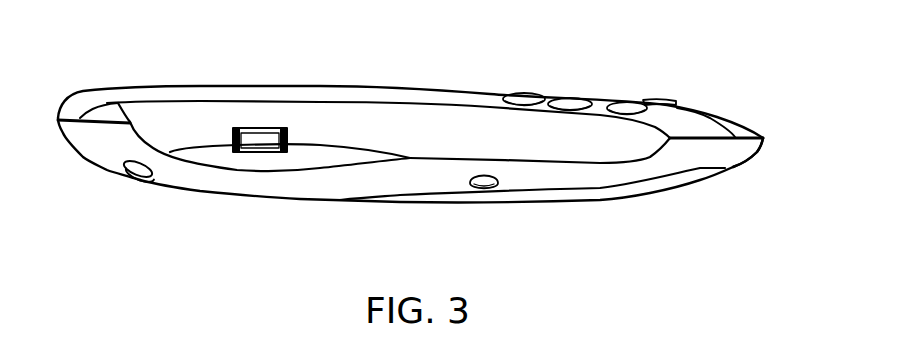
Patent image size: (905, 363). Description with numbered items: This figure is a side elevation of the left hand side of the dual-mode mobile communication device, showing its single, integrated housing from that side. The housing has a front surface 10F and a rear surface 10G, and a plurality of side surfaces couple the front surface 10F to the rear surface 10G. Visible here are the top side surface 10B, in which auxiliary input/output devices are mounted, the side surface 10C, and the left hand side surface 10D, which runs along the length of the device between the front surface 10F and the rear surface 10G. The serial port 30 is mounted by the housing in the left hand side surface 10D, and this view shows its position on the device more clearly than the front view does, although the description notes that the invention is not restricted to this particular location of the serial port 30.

The front surface 10F is at (97, 91).
The top side surface 10B is at (62, 134).
The side surface 10C is at (755, 152).
The left hand side surface 10D is at (643, 140).
The rear surface 10G is at (553, 202).
The serial port 30 is at (265, 153).